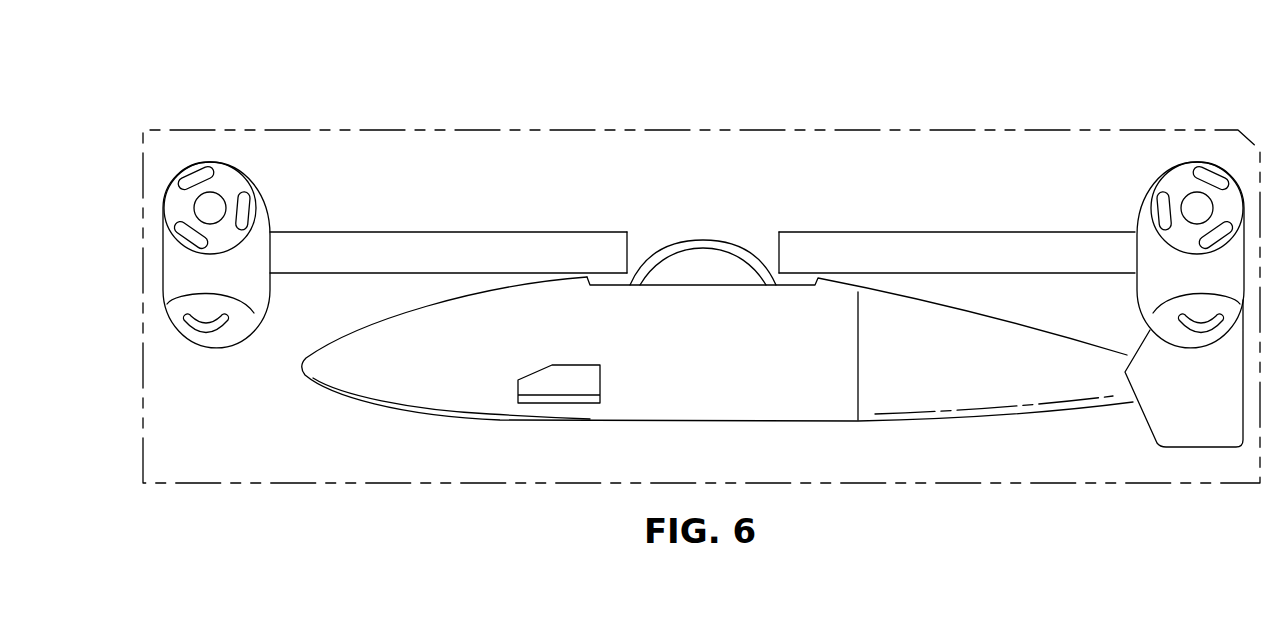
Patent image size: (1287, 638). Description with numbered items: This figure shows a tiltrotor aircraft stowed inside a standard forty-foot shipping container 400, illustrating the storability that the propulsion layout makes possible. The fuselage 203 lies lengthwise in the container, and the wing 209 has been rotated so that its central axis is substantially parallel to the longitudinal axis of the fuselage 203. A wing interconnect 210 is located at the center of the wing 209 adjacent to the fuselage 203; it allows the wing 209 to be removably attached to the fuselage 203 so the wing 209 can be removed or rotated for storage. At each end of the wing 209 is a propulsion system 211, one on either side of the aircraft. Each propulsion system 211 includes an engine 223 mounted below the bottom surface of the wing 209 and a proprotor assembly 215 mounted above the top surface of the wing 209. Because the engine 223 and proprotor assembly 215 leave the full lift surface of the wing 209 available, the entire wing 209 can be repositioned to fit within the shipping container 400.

The shipping container 400 is at (552, 130).
The fuselage 203 is at (387, 412).
The wing 209 is at (948, 232).
The wing interconnect 210 is at (700, 232).
The propulsion system 211 is at (271, 171).
The proprotor assembly 215 is at (1175, 207).
The engine 223 is at (1193, 347).